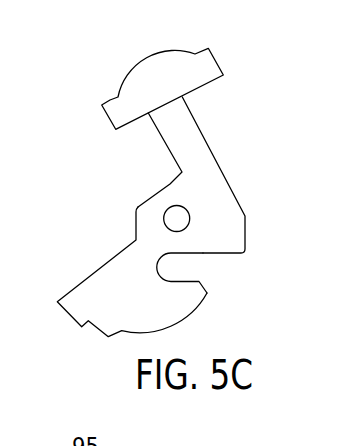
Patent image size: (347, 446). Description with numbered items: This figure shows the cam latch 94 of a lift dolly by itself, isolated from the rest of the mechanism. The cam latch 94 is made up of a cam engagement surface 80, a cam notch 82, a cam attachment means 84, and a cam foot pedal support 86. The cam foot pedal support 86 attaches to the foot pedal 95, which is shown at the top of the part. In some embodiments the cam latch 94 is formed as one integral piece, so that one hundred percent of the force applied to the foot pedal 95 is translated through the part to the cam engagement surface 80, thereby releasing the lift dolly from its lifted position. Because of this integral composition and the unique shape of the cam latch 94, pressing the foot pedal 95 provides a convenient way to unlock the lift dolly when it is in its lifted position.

The cam engagement surface 80 is at (180, 327).
The cam notch 82 is at (203, 253).
The cam attachment means 84 is at (165, 224).
The cam foot pedal support 86 is at (217, 158).
The cam latch 94 is at (180, 188).
The foot pedal 95 is at (222, 62).